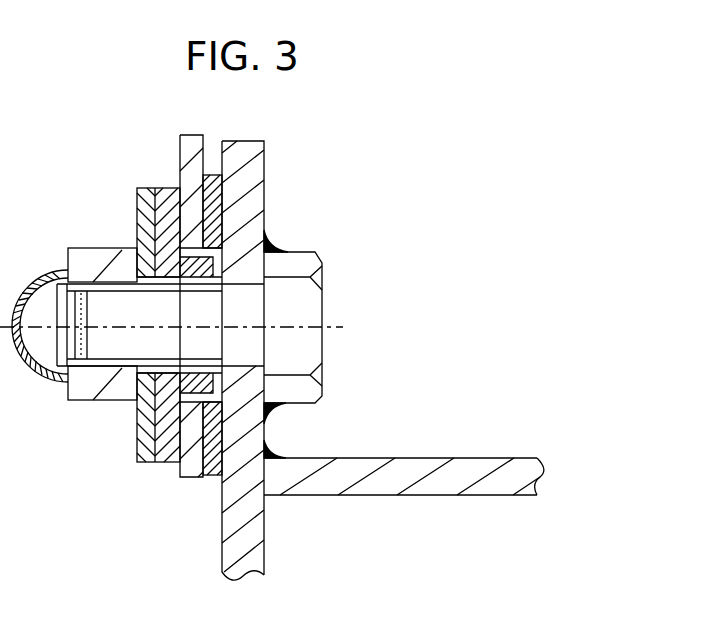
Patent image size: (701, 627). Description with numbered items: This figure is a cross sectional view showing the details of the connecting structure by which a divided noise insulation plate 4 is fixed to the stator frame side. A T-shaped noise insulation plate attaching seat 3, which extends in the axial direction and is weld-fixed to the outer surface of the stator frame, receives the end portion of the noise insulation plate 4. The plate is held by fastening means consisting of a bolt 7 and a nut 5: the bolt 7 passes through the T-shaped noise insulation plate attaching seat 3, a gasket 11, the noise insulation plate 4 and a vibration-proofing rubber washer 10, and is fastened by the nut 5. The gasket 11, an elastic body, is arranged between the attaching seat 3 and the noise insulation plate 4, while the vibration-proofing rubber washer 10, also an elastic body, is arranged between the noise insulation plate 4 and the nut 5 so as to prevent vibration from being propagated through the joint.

The T-shaped noise insulation plate attaching seat 3 is at (255, 199).
The noise insulation plate 4 is at (193, 160).
The nut 5 is at (90, 262).
The bolt 7 is at (298, 300).
The vibration-proofing rubber washer 10 is at (155, 415).
The gasket 11 is at (185, 466).